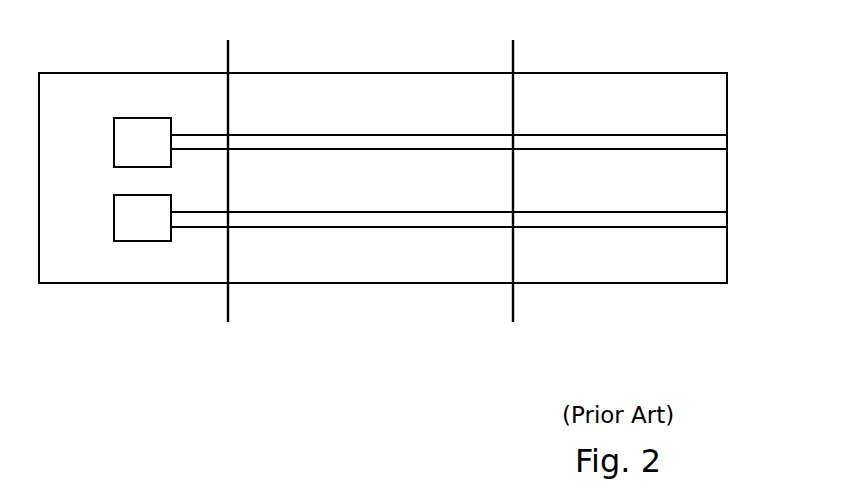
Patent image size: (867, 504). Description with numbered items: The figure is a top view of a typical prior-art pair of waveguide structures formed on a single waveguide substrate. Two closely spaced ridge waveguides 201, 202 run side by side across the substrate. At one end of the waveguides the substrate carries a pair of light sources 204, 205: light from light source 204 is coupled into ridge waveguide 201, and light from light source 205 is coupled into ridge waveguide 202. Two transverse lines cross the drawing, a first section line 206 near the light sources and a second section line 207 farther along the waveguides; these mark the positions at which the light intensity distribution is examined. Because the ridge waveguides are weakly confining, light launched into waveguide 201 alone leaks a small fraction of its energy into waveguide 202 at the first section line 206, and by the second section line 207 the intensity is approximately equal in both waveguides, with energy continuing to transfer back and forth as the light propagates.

The ridge waveguide 201 is at (574, 140).
The ridge waveguide 202 is at (574, 219).
The light source 204 is at (135, 140).
The light source 205 is at (135, 230).
The first section line 206 is at (229, 53).
The second section line 207 is at (514, 52).